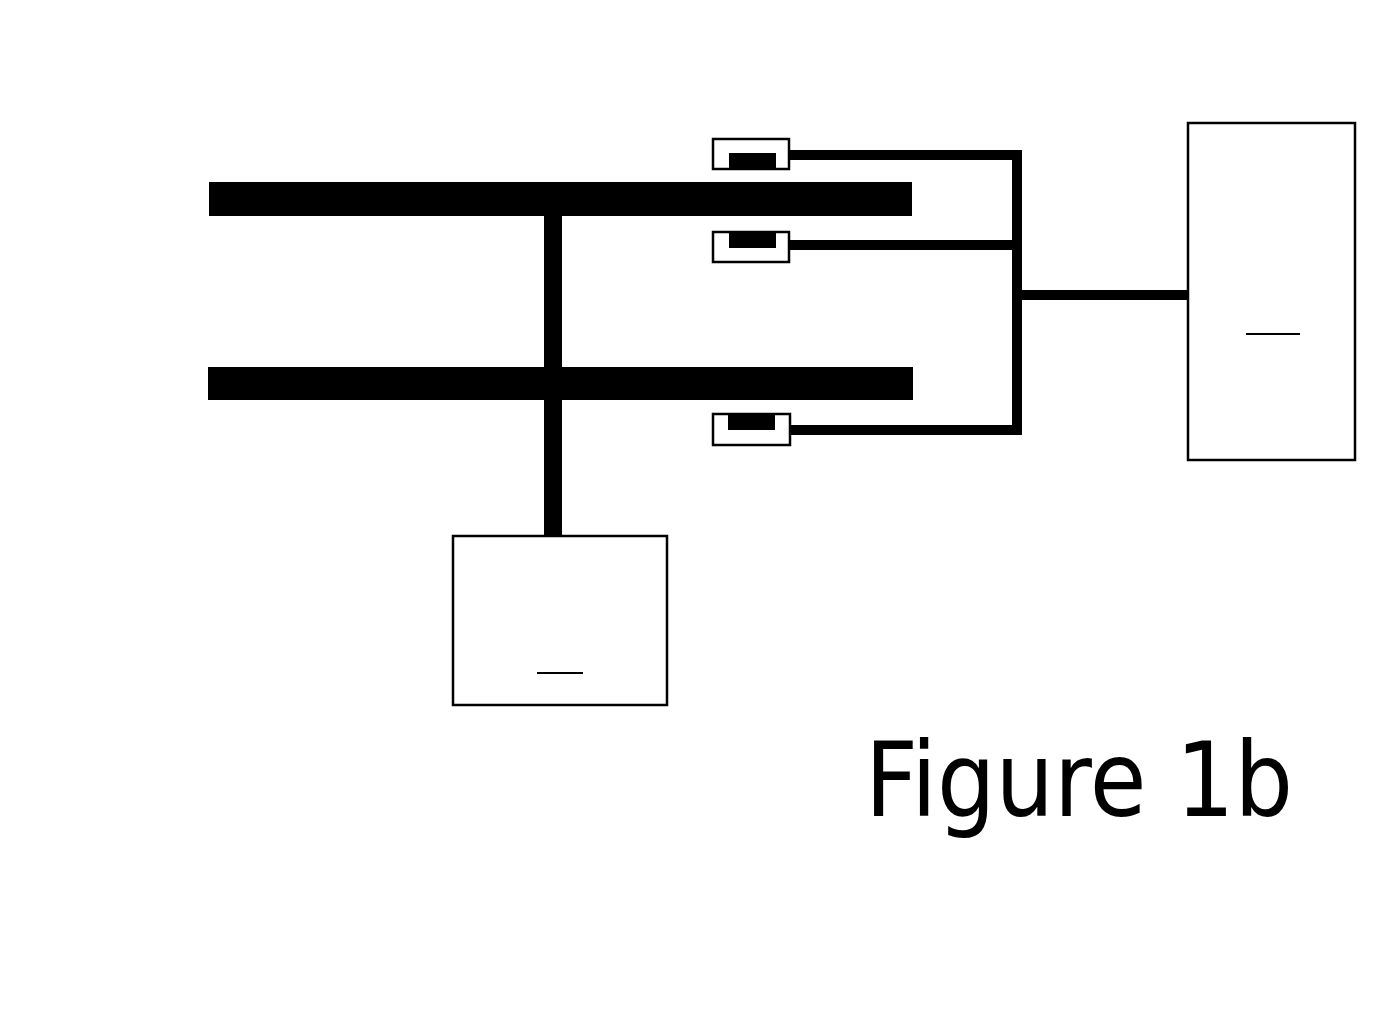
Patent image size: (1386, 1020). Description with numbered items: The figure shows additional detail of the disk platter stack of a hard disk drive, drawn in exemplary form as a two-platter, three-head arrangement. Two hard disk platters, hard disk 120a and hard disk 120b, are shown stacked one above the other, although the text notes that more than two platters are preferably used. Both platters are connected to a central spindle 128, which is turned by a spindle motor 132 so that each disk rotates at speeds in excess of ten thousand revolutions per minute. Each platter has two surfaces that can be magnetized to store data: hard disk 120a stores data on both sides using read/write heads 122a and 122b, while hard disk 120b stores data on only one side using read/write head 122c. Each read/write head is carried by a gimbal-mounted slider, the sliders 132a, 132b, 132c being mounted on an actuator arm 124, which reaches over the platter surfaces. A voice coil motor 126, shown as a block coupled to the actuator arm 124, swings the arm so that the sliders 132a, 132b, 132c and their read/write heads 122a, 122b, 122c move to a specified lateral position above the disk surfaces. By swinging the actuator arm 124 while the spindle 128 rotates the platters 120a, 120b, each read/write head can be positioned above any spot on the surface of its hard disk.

The hard disk 120a is at (255, 182).
The hard disk 120b is at (258, 367).
The read/write head 122a is at (732, 158).
The read/write head 122b is at (742, 248).
The read/write head 122c is at (742, 430).
The actuator arm 124 is at (1014, 436).
The voice coil motor (VCM) 126 is at (1271, 291).
The spindle 128 is at (544, 318).
The spindle motor 132 is at (560, 620).
The slider 132a is at (773, 139).
The slider 132b is at (780, 262).
The slider 132c is at (780, 445).